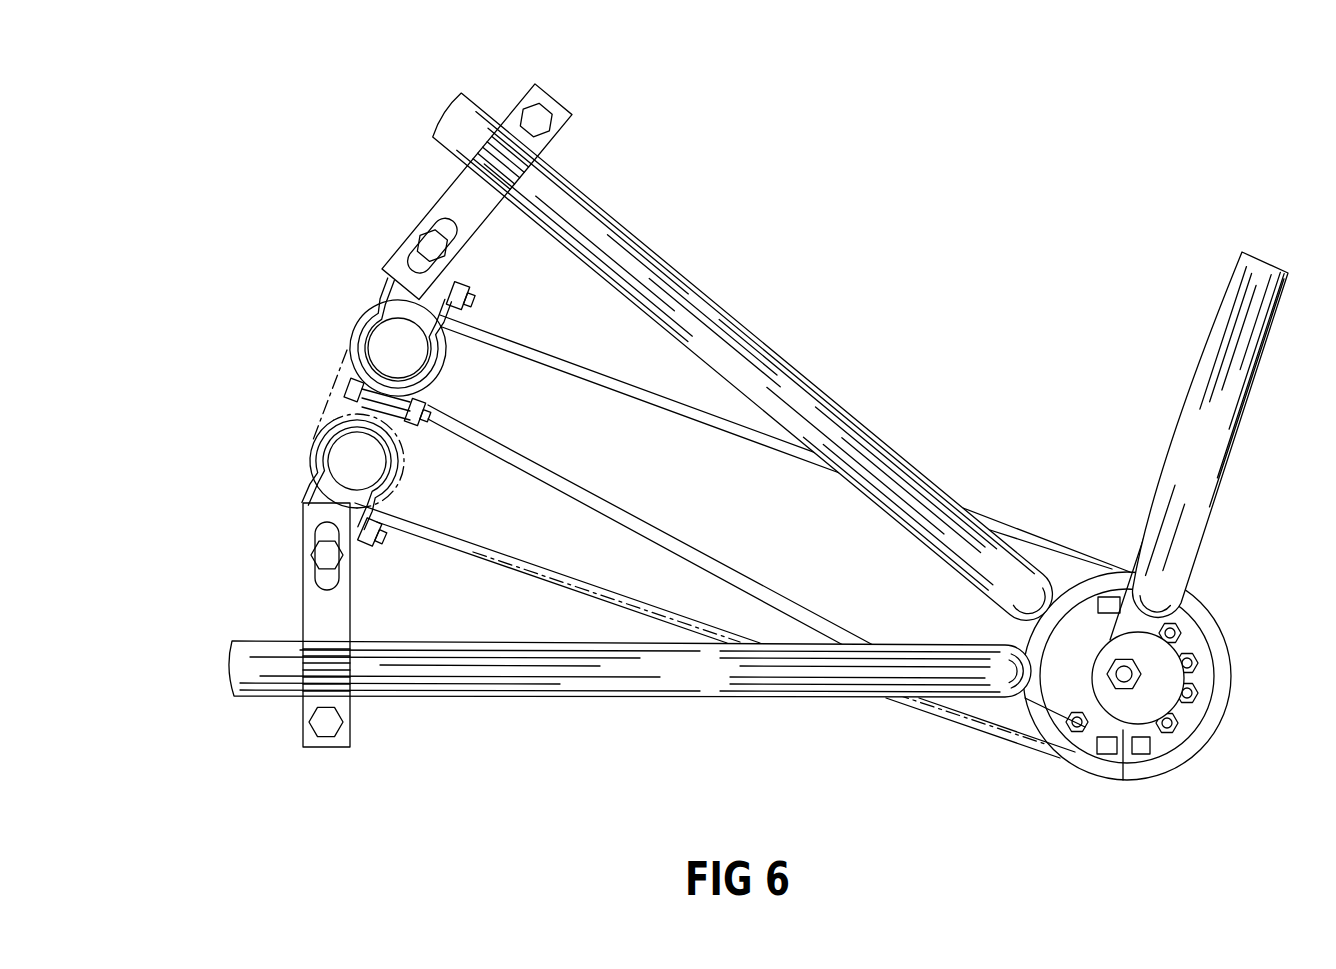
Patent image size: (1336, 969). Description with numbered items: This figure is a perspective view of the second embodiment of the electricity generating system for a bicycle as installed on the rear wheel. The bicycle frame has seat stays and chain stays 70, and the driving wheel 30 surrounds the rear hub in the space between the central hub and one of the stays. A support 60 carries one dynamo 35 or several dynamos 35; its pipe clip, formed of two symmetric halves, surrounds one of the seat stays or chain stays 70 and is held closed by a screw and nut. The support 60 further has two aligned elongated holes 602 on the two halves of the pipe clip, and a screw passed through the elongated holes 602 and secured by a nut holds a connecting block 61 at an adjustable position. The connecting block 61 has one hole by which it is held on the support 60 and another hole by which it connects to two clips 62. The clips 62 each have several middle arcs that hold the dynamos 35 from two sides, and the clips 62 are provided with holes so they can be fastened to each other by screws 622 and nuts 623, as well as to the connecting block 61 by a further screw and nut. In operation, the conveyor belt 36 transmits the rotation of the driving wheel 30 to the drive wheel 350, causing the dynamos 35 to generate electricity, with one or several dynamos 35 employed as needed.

The driving wheel 30 is at (1112, 779).
The dynamo 35 is at (415, 358).
The drive wheel 350 is at (363, 312).
The conveyor belt 36 is at (588, 368).
The support 60 is at (547, 91).
The connecting block 61 is at (458, 232).
The elongated hole 602 is at (447, 212).
The clip 62 is at (327, 457).
The screw 622 is at (347, 390).
The nut 623 is at (406, 432).
The seat stays and chain stays 70 is at (838, 412).